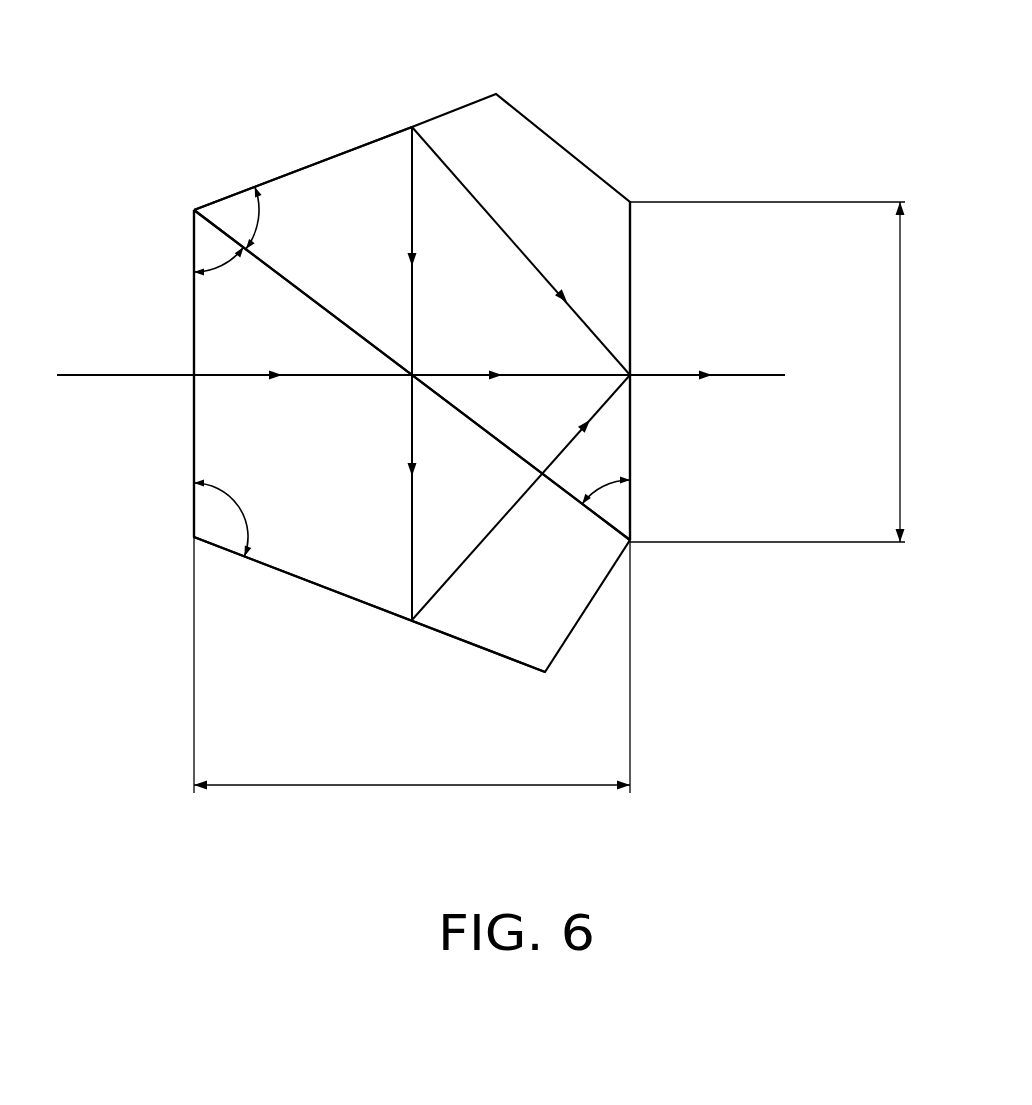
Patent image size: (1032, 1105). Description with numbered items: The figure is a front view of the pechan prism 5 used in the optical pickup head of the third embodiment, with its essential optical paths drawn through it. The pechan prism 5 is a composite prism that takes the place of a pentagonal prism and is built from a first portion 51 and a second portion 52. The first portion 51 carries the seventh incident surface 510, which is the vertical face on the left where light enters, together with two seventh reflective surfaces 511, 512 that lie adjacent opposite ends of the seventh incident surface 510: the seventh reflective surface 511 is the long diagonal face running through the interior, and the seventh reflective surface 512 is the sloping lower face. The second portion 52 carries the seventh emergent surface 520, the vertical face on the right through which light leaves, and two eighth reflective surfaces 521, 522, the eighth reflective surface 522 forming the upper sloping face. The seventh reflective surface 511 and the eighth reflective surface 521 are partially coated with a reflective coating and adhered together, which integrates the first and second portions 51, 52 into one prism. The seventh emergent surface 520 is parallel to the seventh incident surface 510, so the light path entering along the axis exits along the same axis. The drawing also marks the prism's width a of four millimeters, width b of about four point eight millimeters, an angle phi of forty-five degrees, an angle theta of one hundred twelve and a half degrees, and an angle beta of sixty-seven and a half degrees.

The pechan prism 5 is at (481, 402).
The first portion 51 is at (345, 469).
The second portion 52 is at (508, 303).
The seventh incident surface 510 is at (195, 447).
The seventh reflective surface 511 is at (297, 288).
The seventh reflective surface 512 is at (467, 642).
The seventh emergent surface 520 is at (630, 453).
The eighth reflective surface 521 is at (347, 322).
The eighth reflective surface 522 is at (372, 138).